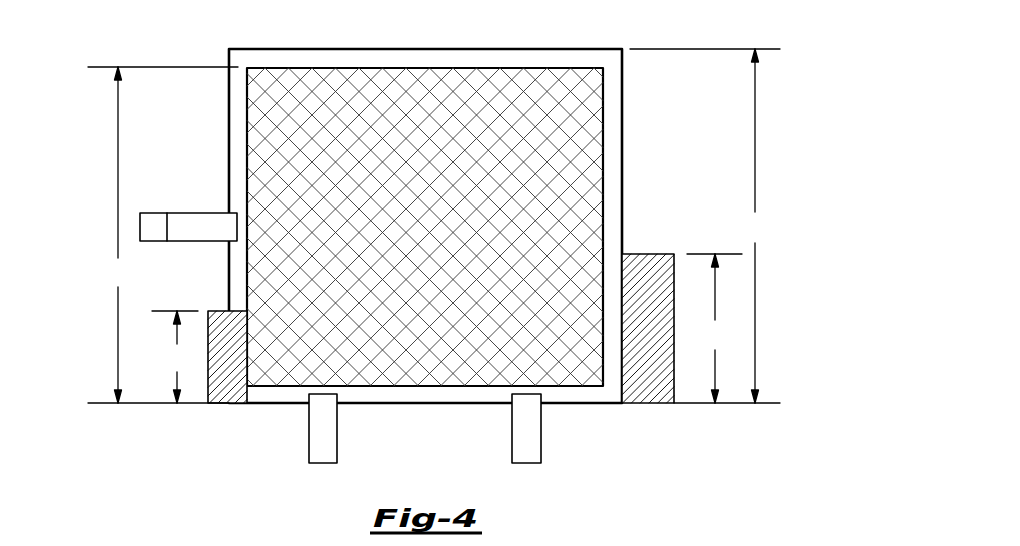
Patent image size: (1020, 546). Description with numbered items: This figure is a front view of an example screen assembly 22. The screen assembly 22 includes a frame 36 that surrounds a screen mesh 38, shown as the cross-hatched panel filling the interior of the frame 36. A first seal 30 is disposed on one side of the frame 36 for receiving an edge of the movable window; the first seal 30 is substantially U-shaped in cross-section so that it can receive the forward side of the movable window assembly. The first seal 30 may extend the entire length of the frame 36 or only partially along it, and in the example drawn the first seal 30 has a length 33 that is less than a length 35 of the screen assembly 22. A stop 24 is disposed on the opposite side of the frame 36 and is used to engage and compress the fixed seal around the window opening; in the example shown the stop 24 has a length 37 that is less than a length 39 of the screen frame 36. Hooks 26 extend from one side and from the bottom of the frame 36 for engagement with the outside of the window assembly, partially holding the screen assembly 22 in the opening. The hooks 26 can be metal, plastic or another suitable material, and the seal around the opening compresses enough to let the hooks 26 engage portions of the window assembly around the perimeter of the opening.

The screen assembly 22 is at (212, 99).
The stop 24 is at (208, 386).
The hooks 26 is at (190, 213).
The first seal 30 is at (679, 300).
The length of the first seal 33 is at (714, 328).
The length of the screen assembly 35 is at (705, 226).
The frame 36 is at (368, 68).
The length of the stop 37 is at (175, 357).
The screen mesh 38 is at (488, 152).
The length of the screen frame 39 is at (163, 235).